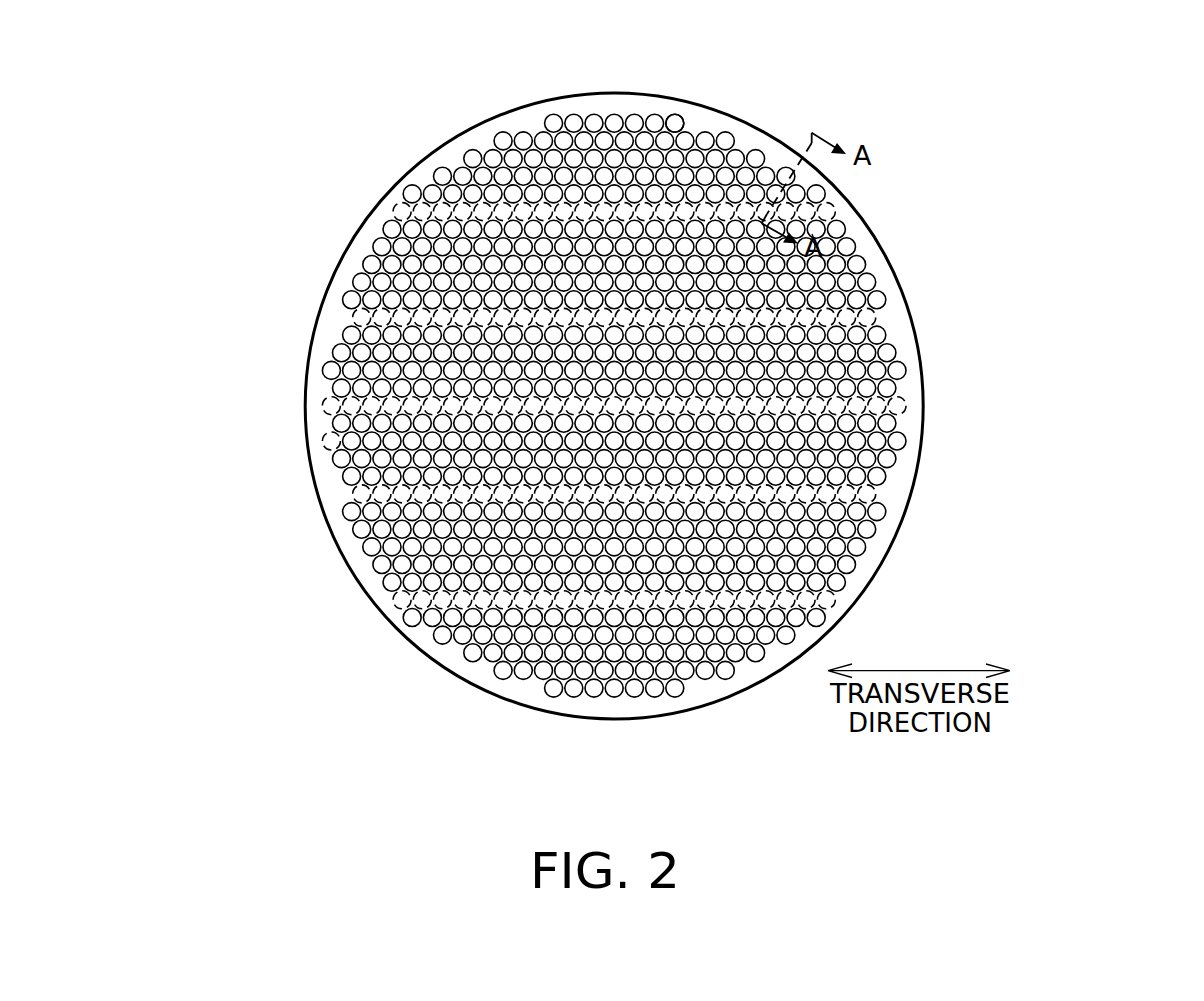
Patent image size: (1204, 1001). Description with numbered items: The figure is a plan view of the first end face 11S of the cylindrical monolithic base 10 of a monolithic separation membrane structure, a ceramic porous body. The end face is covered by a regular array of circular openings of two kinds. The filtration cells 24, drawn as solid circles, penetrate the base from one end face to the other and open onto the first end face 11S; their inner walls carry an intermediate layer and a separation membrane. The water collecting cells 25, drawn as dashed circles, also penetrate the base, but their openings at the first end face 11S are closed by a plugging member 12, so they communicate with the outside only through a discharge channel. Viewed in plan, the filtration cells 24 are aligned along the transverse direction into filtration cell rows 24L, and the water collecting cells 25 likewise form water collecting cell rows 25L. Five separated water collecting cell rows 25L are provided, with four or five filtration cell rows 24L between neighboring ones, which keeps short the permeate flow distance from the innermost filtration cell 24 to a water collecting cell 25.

The monolithic base 10 is at (309, 433).
The first end face 11S is at (688, 123).
The plugging member 12 is at (685, 405).
The filtration cell 24 is at (382, 248).
The water collecting cell 25 is at (363, 317).
The filtration cell row 24L is at (698, 240).
The water collecting cell row 25L is at (641, 265).